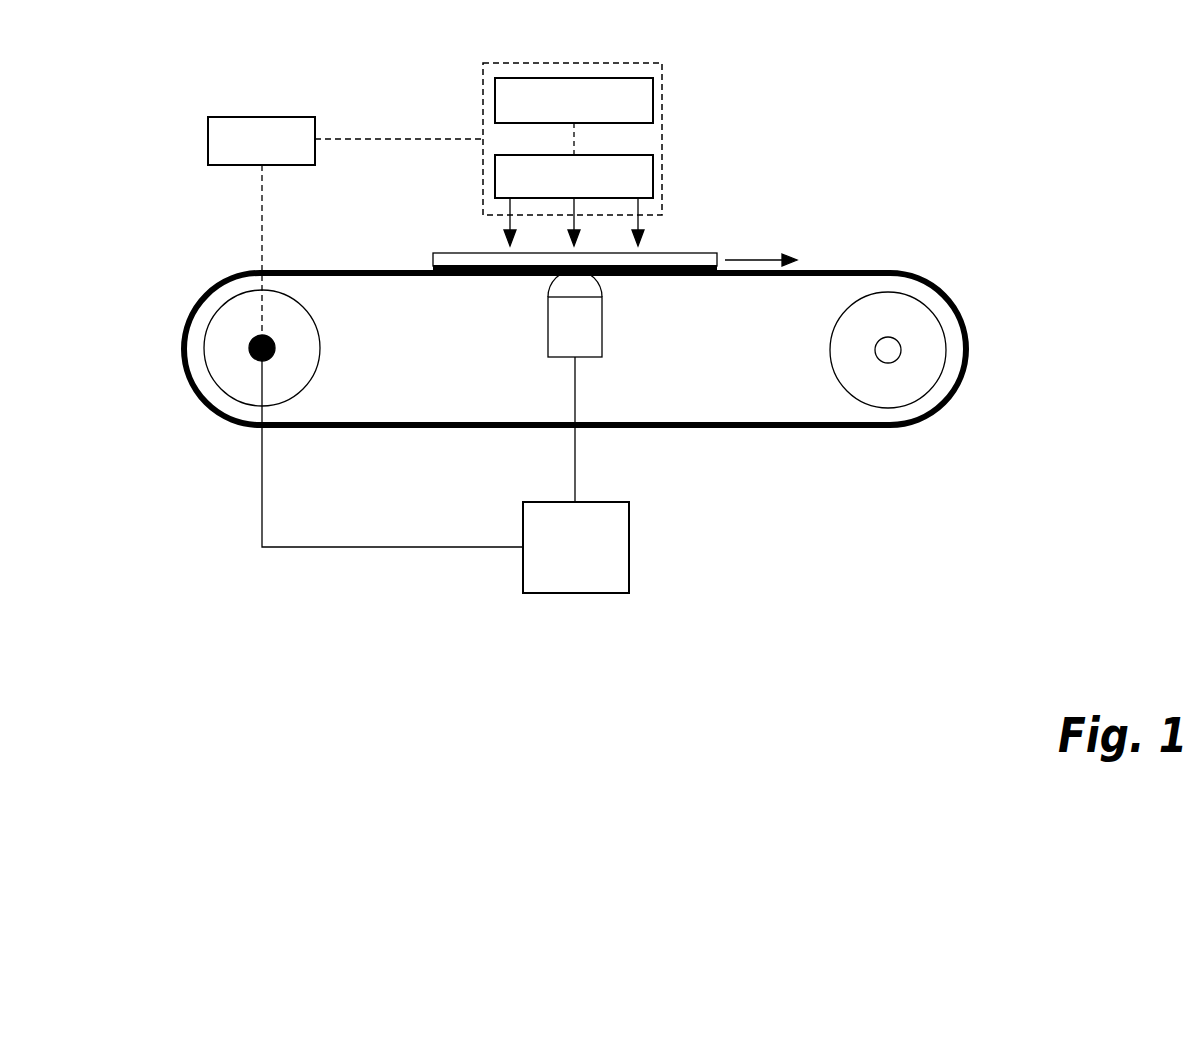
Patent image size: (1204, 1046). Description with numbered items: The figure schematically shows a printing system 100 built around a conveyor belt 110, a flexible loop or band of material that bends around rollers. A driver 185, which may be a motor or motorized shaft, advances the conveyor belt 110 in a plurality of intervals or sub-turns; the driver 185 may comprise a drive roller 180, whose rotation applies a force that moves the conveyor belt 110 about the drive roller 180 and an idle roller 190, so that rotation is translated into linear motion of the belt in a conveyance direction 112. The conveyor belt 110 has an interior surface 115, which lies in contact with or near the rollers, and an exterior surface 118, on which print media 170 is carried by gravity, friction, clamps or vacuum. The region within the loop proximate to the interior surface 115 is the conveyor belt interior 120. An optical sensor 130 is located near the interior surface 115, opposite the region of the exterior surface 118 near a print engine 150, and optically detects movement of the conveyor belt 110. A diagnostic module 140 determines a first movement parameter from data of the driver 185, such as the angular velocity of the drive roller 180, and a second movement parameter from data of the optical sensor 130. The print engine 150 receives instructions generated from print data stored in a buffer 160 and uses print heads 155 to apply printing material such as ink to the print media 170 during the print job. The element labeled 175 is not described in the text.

The printing system 100 is at (878, 150).
The conveyor belt 110 is at (277, 270).
The conveyance direction 112 is at (757, 250).
The interior surface 115 is at (462, 280).
The exterior surface 118 is at (355, 270).
The conveyor belt interior 120 is at (738, 407).
The optical sensor 130 is at (565, 348).
The diagnostic module 140 is at (576, 547).
The print engine 150 is at (662, 104).
The print heads 155 is at (574, 200).
The buffer 160 is at (574, 116).
The print media 170 is at (678, 253).
The motor controller 175 is at (365, 332).
The drive roller 180 is at (215, 388).
The driver 185 is at (275, 350).
The idle roller 190 is at (918, 298).